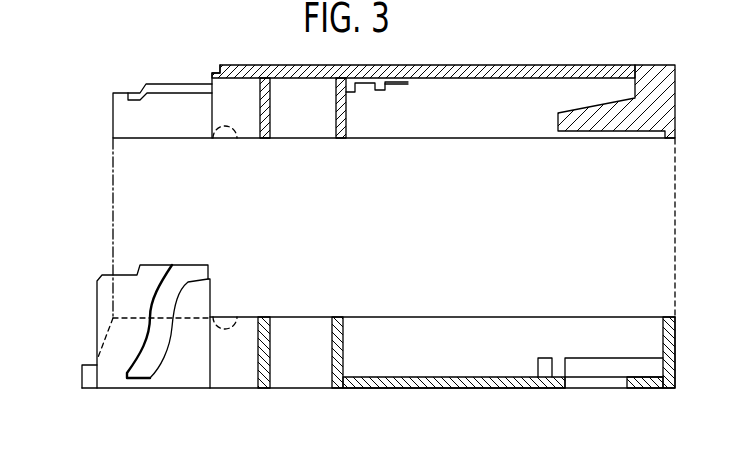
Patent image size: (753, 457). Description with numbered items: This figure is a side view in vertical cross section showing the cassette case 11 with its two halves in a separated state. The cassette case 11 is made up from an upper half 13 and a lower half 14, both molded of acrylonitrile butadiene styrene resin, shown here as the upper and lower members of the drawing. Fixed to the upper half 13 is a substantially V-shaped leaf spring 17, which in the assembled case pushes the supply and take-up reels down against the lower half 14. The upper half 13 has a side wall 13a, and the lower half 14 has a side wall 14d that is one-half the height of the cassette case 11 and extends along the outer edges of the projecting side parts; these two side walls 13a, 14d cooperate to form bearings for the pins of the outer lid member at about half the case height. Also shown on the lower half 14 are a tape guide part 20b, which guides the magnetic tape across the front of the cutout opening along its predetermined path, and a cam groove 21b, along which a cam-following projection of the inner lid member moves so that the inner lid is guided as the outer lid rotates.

The cassette case 11 is at (72, 94).
The upper half 13 is at (463, 66).
The side wall 13a is at (445, 132).
The leaf spring 17 is at (410, 83).
The tape guide part 20b is at (95, 320).
The cam groove 21b is at (165, 308).
The lower half 14 is at (467, 392).
The side wall 14d is at (430, 325).